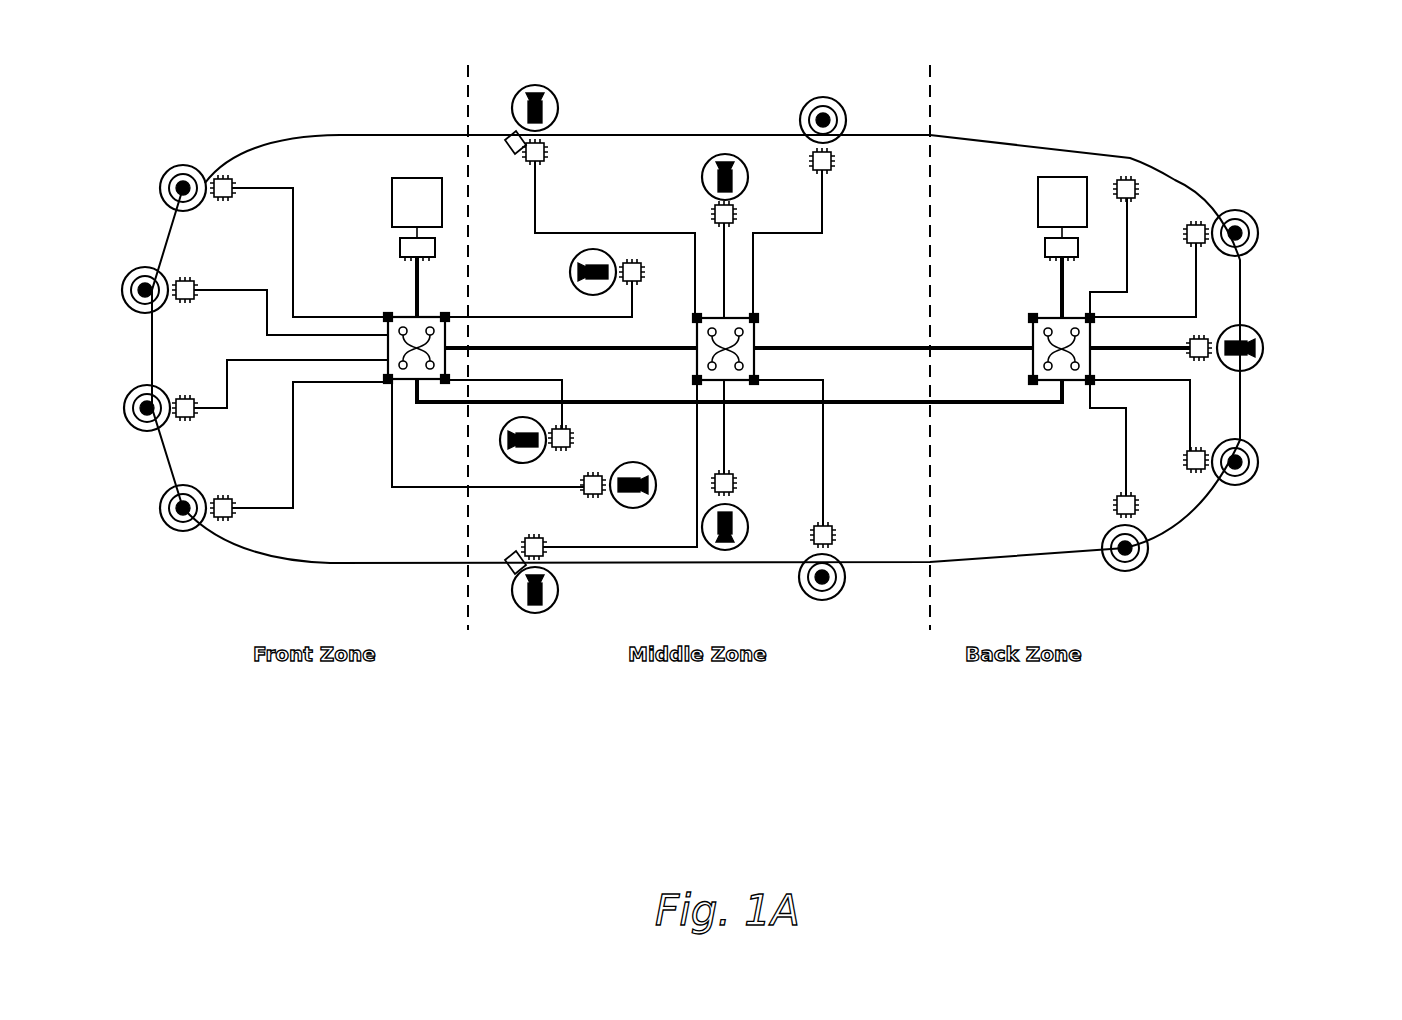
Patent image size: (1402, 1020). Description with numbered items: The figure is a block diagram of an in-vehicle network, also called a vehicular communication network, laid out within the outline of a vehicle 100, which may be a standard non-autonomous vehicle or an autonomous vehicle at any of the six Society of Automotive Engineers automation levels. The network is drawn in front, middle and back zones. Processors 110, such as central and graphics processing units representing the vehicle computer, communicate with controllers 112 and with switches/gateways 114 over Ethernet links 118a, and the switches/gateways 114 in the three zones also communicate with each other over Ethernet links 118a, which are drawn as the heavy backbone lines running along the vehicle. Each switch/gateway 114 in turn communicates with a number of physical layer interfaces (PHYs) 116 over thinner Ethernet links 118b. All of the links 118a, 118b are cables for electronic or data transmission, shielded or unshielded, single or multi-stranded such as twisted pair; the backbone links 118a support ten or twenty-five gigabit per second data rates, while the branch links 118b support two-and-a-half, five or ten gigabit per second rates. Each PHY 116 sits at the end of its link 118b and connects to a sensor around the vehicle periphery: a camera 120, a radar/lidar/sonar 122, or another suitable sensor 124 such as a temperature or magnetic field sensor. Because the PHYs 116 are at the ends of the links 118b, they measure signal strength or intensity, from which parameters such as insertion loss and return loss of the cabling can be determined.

The vehicle 100 is at (266, 90).
The processors 110 is at (417, 177).
The controllers 112 is at (400, 247).
The switches/gateways 114 is at (395, 385).
The physical layer interfaces (PHYs) 116 is at (222, 178).
The other suitable sensors 124 is at (1126, 180).
The Ethernet links 118a is at (412, 285).
The Ethernet links 118b is at (295, 210).
The camera 120 is at (535, 86).
The radar/lidar/sonar 122 is at (168, 170).